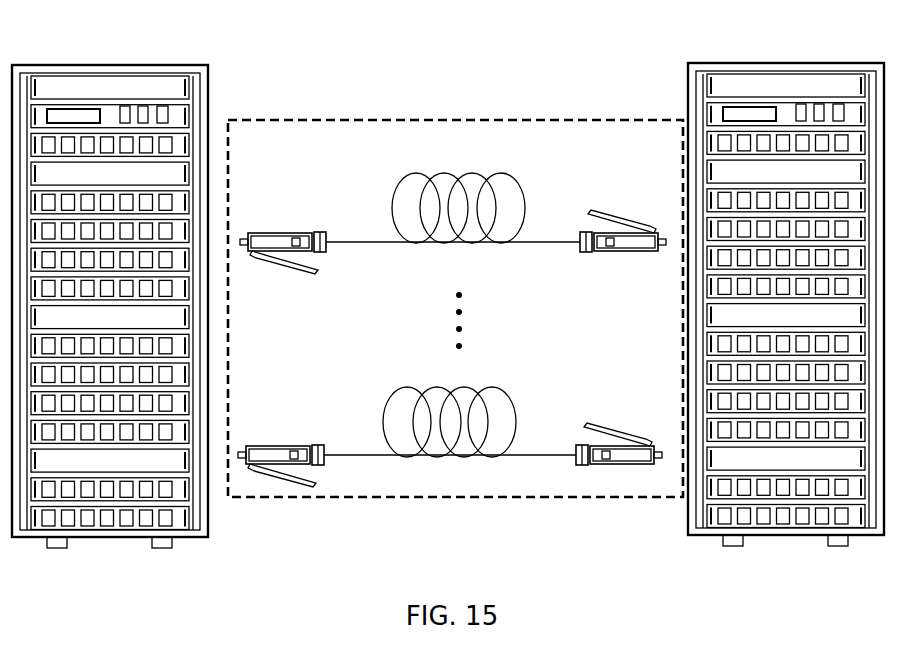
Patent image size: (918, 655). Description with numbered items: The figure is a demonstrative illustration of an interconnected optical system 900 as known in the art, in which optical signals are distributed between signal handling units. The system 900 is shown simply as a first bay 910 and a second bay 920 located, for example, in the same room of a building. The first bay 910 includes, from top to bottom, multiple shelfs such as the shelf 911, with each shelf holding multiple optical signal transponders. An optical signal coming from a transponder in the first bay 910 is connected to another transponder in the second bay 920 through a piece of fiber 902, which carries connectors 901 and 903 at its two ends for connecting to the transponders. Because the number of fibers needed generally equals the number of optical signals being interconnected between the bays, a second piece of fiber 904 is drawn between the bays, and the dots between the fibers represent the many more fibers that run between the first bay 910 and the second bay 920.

The interconnected optical system 900 is at (314, 529).
The connector 901 is at (280, 228).
The piece of fiber 902 is at (465, 185).
The connector 903 is at (613, 200).
The second piece of fiber 904 is at (433, 390).
The first bay 910 is at (113, 63).
The shelf 911 is at (172, 116).
The second bay 920 is at (787, 61).